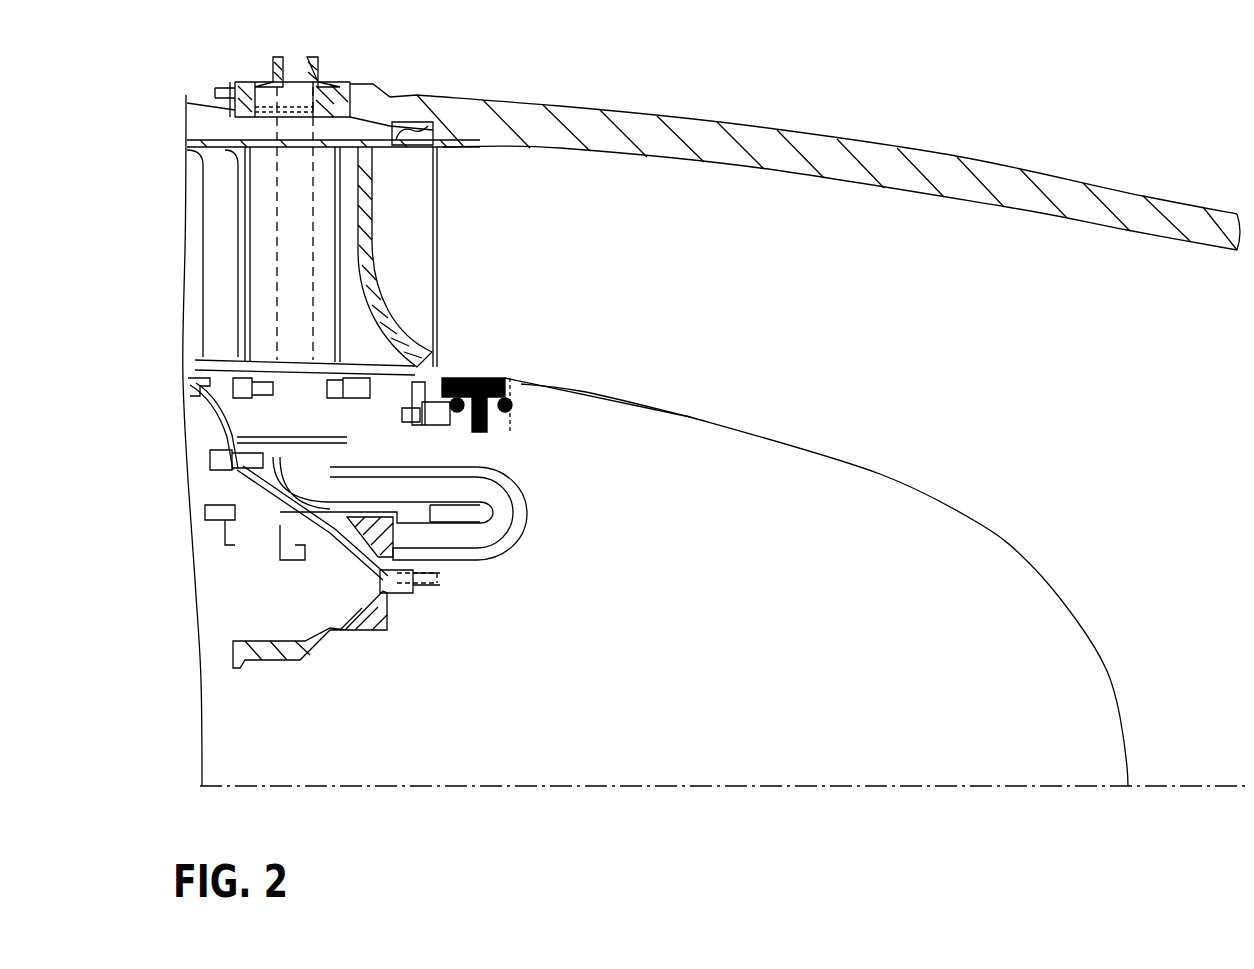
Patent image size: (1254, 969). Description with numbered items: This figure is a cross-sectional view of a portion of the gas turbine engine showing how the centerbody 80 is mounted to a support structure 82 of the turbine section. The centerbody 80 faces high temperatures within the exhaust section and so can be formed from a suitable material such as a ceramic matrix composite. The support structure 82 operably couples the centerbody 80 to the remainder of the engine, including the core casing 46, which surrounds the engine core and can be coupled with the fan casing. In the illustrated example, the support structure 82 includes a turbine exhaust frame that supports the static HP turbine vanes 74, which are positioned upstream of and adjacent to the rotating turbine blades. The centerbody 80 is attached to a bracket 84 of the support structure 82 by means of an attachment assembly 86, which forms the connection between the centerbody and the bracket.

The core casing 46 is at (706, 133).
The static turbine vanes 74 is at (240, 202).
The centerbody 80 is at (886, 472).
The support structure 82 is at (403, 295).
The bracket 84 is at (453, 417).
The attachment assembly 86 is at (517, 411).